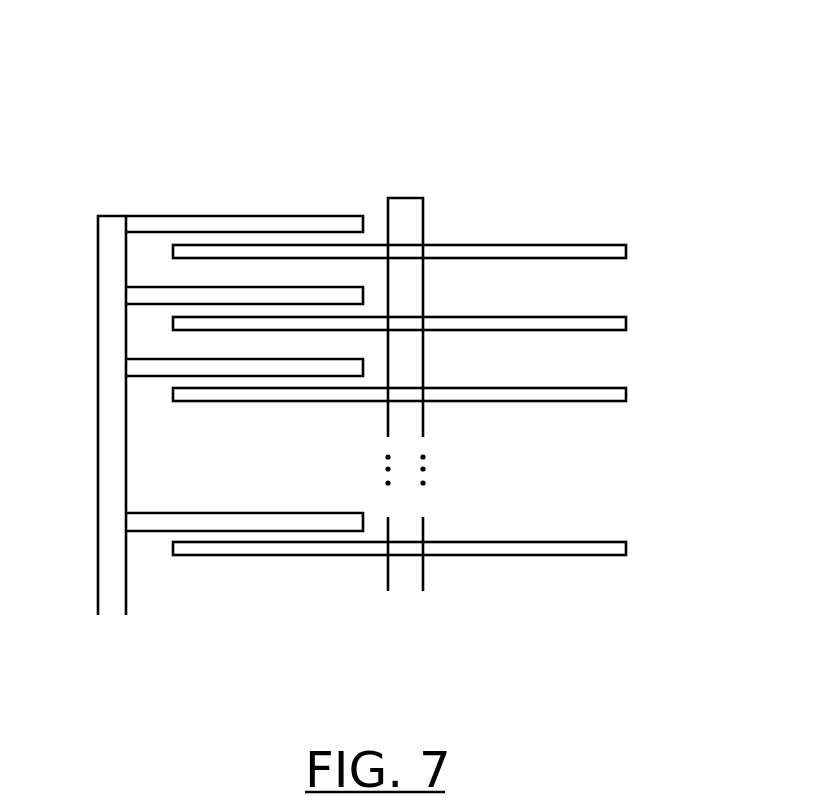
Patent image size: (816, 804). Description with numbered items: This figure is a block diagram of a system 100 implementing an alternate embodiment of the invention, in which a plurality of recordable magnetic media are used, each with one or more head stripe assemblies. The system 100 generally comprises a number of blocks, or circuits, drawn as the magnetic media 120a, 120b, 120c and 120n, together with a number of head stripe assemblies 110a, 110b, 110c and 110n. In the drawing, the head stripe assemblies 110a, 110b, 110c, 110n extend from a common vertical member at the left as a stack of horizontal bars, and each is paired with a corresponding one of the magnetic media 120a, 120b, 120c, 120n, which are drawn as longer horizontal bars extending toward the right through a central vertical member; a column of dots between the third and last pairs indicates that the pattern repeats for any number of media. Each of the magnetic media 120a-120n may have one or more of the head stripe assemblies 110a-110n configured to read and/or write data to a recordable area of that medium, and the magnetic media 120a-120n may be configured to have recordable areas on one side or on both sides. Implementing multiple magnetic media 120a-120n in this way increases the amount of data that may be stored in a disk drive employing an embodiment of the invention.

The system 100 is at (150, 52).
The head stripe assembly 110a is at (145, 214).
The head stripe assembly 110b is at (145, 286).
The head stripe assembly 110c is at (145, 357).
The head stripe assembly 110n is at (145, 511).
The magnetic media 120a is at (612, 245).
The magnetic media 120b is at (612, 317).
The magnetic media 120c is at (612, 388).
The magnetic media 120n is at (612, 542).